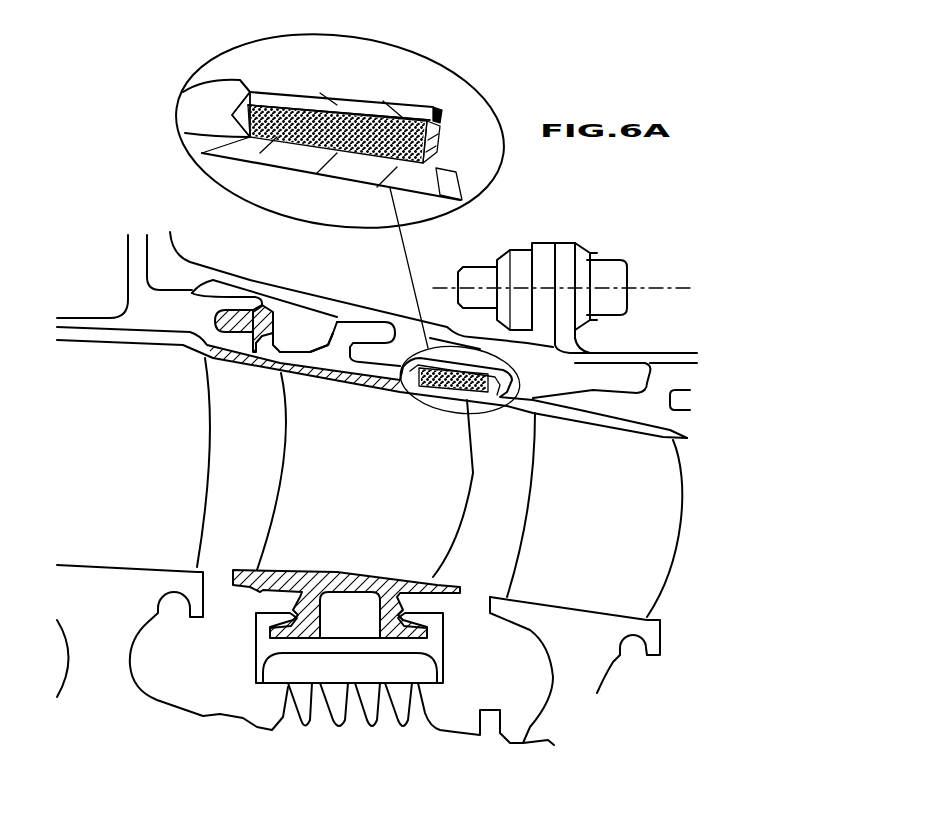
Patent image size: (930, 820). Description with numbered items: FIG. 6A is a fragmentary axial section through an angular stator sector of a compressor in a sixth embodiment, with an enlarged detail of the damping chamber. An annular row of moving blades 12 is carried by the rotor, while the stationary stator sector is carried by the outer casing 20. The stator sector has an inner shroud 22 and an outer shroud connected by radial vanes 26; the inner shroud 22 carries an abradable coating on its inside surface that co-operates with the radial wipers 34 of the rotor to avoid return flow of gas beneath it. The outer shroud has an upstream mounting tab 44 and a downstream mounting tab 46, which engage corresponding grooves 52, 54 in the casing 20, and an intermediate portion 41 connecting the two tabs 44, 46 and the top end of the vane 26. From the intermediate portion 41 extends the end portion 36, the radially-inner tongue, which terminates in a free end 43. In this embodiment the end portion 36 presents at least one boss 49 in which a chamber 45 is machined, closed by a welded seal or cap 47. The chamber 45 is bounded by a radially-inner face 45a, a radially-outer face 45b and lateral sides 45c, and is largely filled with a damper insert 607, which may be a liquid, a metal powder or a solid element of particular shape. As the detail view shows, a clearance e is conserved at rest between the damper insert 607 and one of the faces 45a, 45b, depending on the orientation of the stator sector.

The moving blades 12 is at (180, 497).
The outer casing 20 is at (147, 310).
The inner shroud 22 is at (455, 574).
The radial vane 26 is at (480, 473).
The radial wipers 34 is at (418, 717).
The end portion 36 is at (190, 133).
The intermediate portion 41 is at (297, 332).
The free end 43 is at (460, 183).
The upstream mounting tab 44 is at (230, 317).
The chamber 45 is at (333, 100).
The radially-inner face 45a is at (203, 157).
The radially-outer face 45b is at (270, 92).
The lateral sides 45c is at (185, 92).
The downstream mounting tab 46 is at (353, 330).
The welded seal or cap 47 is at (420, 143).
The boss 49 is at (310, 92).
The groove 52 is at (217, 318).
The groove 54 is at (387, 327).
The damper insert 607 is at (430, 107).
The clearance e is at (383, 137).